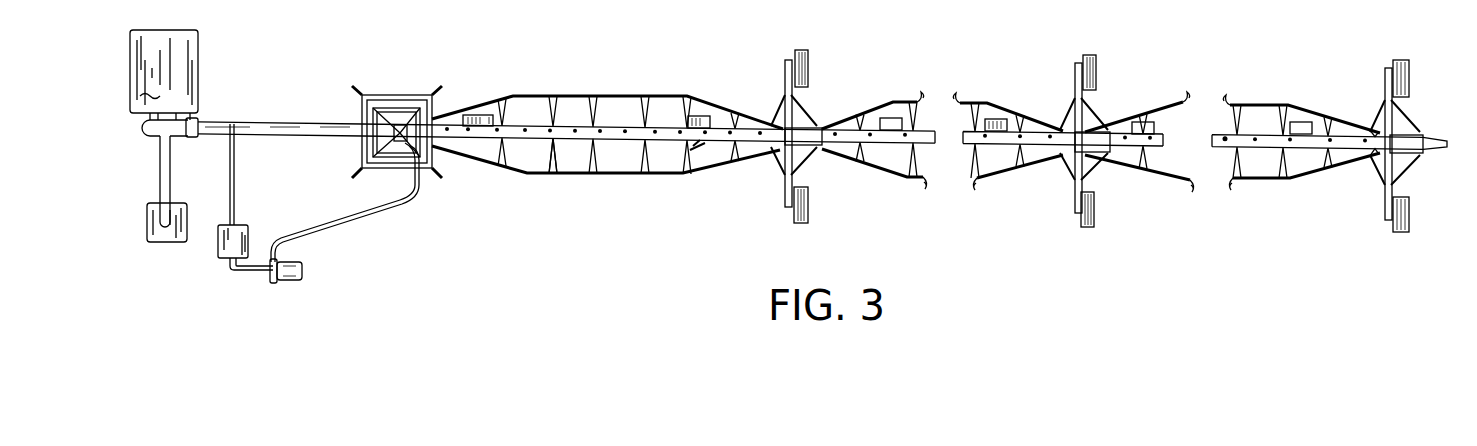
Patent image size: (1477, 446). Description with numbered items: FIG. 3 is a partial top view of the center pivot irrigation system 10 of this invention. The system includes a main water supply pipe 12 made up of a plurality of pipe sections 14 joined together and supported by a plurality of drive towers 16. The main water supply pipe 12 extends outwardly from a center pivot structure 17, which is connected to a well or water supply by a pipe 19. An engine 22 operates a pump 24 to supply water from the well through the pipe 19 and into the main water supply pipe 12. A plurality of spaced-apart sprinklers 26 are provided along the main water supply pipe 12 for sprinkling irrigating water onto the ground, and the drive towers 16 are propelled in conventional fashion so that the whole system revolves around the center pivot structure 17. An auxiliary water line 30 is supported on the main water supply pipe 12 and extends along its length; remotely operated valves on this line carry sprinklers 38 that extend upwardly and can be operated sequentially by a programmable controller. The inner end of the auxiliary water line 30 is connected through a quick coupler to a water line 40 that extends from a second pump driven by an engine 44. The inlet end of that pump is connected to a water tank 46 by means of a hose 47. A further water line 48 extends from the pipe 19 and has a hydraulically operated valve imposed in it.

The center pivot irrigation system 10 is at (906, 108).
The main water supply pipe 12 is at (532, 123).
The pipe sections 14 is at (622, 140).
The drive towers 16 is at (818, 112).
The center pivot structure 17 is at (398, 93).
The pipe 19 is at (281, 126).
The engine 22 is at (164, 75).
The pump 24 is at (152, 138).
The sprinklers 26 is at (1225, 150).
The auxiliary water line 30 is at (573, 147).
The sprinkler 38 is at (700, 145).
The water line 40 is at (330, 226).
The engine 44 is at (303, 277).
The water tank 46 is at (214, 260).
The hose 47 is at (262, 273).
The water line 48 is at (236, 185).